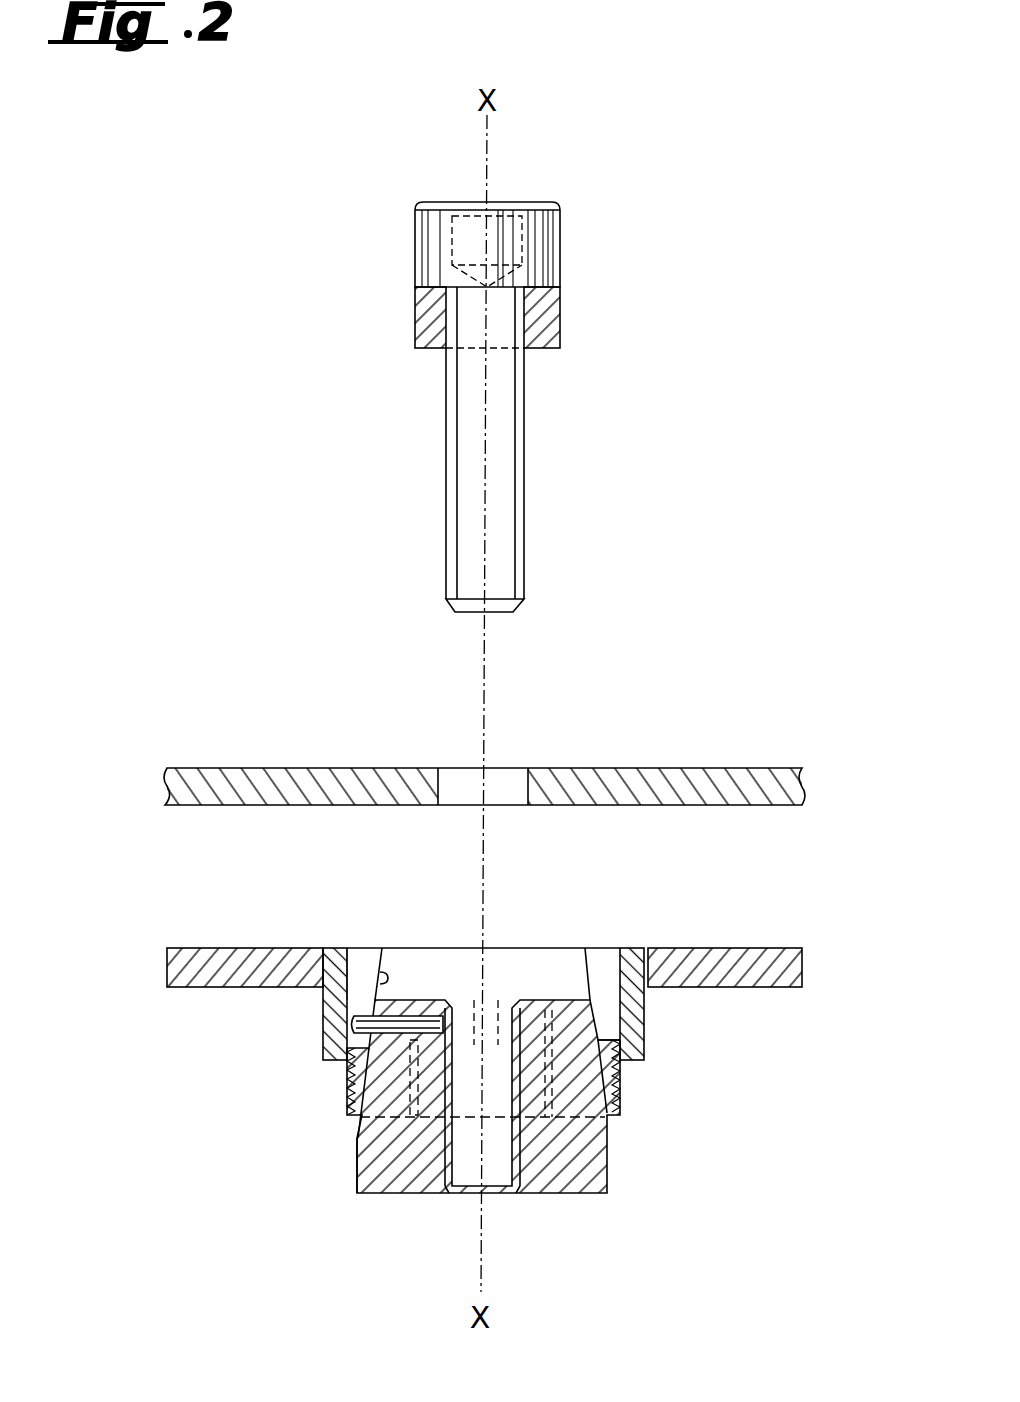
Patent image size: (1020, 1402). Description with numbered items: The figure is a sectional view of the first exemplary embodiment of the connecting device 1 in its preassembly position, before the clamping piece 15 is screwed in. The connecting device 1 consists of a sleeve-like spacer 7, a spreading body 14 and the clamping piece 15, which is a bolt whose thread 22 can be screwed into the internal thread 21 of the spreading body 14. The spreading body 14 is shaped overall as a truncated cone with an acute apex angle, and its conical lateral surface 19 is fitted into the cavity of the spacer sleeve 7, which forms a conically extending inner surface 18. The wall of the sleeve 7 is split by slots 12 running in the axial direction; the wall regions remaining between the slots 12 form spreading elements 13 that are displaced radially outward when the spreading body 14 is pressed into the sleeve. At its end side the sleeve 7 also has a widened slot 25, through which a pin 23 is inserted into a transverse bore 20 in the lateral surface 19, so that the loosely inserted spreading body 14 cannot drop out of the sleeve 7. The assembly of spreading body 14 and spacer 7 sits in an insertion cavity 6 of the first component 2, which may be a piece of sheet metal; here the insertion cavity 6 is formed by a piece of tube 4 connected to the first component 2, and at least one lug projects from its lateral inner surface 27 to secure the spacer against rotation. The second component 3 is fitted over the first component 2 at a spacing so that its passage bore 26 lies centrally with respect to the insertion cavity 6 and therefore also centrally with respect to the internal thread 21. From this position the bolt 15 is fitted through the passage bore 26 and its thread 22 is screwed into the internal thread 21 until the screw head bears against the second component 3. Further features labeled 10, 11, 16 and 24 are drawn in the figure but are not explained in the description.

The connecting device 1 is at (266, 653).
The first component 2 is at (737, 947).
The second component 3 is at (737, 768).
The piece of tube 4 is at (623, 1023).
The insertion cavity 6 is at (620, 1040).
The spacer sleeve 7 is at (568, 934).
The conical bore of sleeve 10 is at (603, 965).
The external thread 11 is at (613, 1118).
The slots 12 is at (483, 948).
The spreading elements 13 is at (613, 1118).
The spreading body 14 is at (554, 1205).
The clamping piece 15 is at (415, 250).
The threaded body 16 is at (348, 1098).
The conically extending inner surface 18 is at (377, 986).
The conical lateral surface 19 is at (358, 1127).
The transverse bore 20 is at (350, 1058).
The internal thread 21 is at (515, 1160).
The thread 22 is at (518, 472).
The pin 23 is at (350, 1015).
The upper face of thread 24 is at (598, 1040).
The widened slot 25 is at (366, 958).
The passage bore 26 is at (512, 775).
The lateral inner surface 27 is at (345, 983).